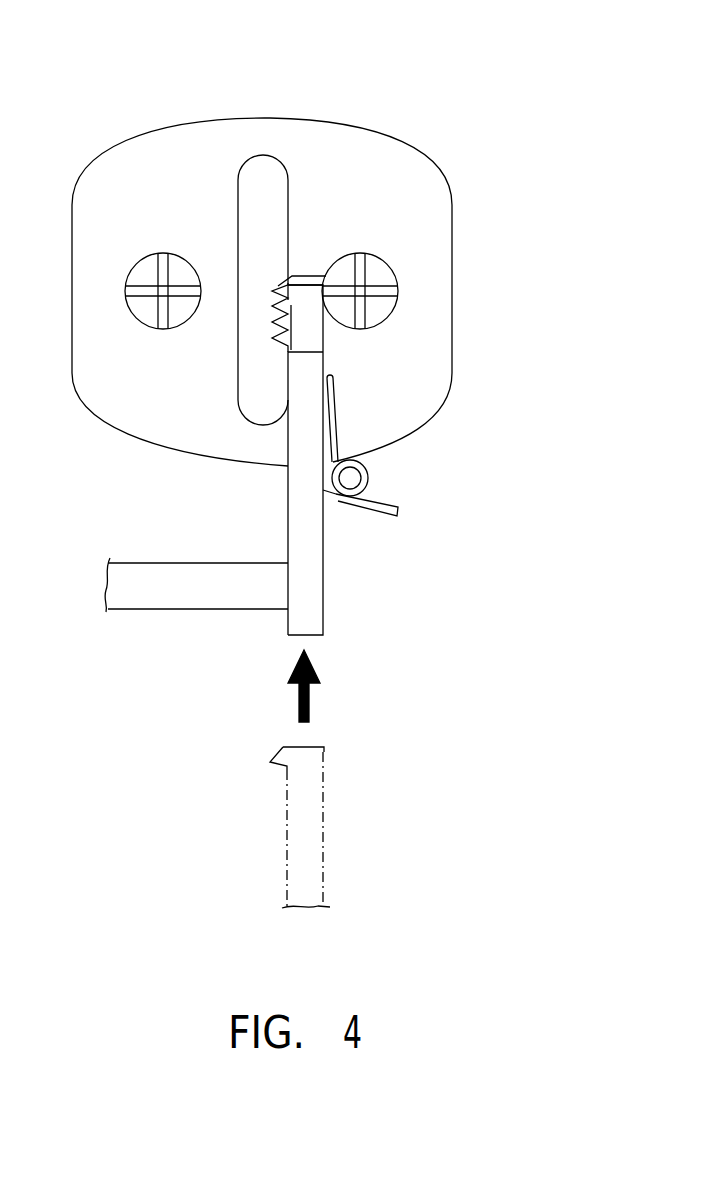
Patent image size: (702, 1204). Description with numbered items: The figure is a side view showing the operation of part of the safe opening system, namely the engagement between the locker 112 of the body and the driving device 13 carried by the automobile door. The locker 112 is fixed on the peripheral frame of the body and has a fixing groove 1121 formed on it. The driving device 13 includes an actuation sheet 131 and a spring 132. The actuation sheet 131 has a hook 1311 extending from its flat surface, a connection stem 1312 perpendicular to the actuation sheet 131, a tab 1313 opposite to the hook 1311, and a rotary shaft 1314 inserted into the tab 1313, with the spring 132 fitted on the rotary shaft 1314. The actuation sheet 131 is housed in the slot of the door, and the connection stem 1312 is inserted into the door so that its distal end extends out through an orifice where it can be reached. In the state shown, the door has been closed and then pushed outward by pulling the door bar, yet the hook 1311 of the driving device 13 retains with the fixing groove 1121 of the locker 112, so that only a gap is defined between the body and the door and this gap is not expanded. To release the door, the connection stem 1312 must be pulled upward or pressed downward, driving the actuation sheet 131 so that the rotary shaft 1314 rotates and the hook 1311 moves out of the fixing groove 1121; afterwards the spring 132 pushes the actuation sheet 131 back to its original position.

The driving device 13 is at (296, 421).
The actuation sheet 131 is at (305, 509).
The hook 1311 is at (285, 301).
The connection stem 1312 is at (195, 585).
The tab 1313 is at (330, 495).
The rotary shaft 1314 is at (350, 478).
The spring 132 is at (435, 453).
The locker 112 is at (266, 213).
The fixing groove 1121 is at (279, 288).